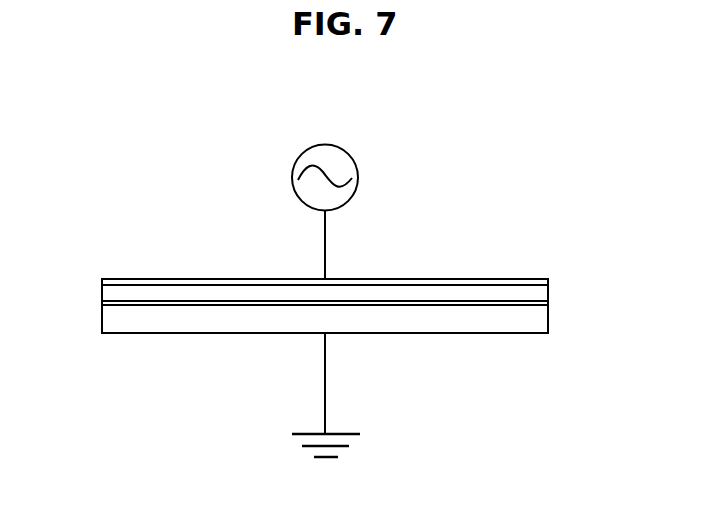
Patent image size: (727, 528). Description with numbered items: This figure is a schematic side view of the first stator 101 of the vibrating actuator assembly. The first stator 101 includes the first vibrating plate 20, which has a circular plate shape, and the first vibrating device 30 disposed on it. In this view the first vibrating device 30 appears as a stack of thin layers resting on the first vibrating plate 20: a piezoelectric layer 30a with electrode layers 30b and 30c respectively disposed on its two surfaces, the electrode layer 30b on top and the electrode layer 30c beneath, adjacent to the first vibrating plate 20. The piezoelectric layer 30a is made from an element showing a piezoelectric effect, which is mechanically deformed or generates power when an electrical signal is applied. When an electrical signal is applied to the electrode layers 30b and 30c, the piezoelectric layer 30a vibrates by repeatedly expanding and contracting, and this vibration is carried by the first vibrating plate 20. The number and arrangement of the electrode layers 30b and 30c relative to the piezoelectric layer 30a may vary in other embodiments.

The first stator 101 is at (128, 268).
The first vibrating device 30 is at (634, 252).
The electrode layer 30b is at (548, 281).
The piezoelectric layer 30a is at (545, 293).
The electrode layer 30c is at (545, 302).
The first vibrating plate 20 is at (545, 322).